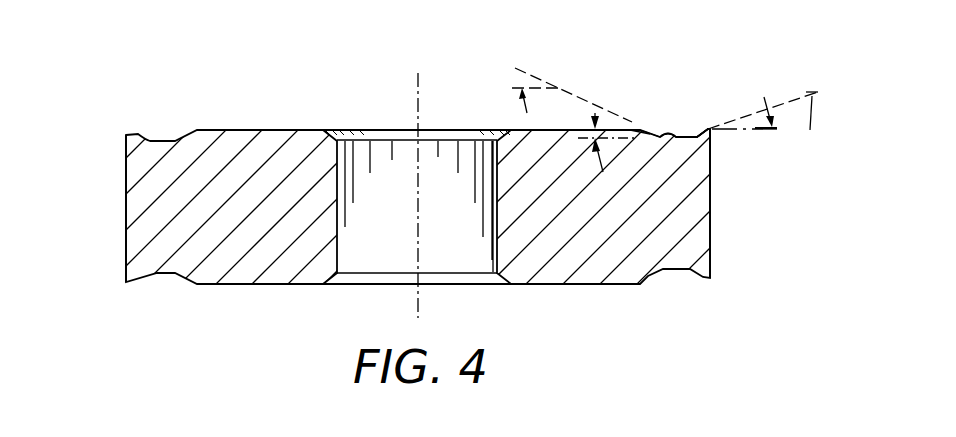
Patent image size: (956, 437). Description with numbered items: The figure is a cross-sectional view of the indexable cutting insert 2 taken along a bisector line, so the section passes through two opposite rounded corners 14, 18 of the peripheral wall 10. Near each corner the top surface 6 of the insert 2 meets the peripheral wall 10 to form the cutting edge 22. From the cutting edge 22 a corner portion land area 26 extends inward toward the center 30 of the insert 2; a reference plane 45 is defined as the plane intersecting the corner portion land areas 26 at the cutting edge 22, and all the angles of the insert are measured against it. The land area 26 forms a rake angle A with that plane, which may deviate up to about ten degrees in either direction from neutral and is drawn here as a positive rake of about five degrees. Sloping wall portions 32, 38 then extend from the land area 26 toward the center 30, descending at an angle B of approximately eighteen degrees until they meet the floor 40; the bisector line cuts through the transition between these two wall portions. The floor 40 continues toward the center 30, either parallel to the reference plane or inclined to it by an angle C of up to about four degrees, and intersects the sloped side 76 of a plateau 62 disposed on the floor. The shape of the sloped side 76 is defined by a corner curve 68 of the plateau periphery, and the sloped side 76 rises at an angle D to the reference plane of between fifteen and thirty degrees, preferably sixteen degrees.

The indexable cutting insert 2 is at (246, 85).
The top surface 6 is at (676, 54).
The peripheral wall 10 is at (724, 240).
The rounded corner 14 is at (740, 196).
The rounded corner 18 is at (116, 213).
The cutting edge 22 is at (712, 138).
The corner portion land area 26 is at (709, 128).
The center 30 is at (417, 105).
The sloping wall portion 32 is at (694, 130).
The sloping wall portion 38 is at (694, 130).
The floor 40 is at (667, 138).
The reference plane 45 is at (760, 137).
The plateau 62 is at (583, 118).
The corner curve 68 is at (655, 132).
The sloped side 76 is at (645, 133).
The rake angle of corner portion land area A is at (769, 136).
The sloping wall angle B is at (811, 82).
The floor angle C is at (606, 170).
The sloped side angle D is at (530, 62).